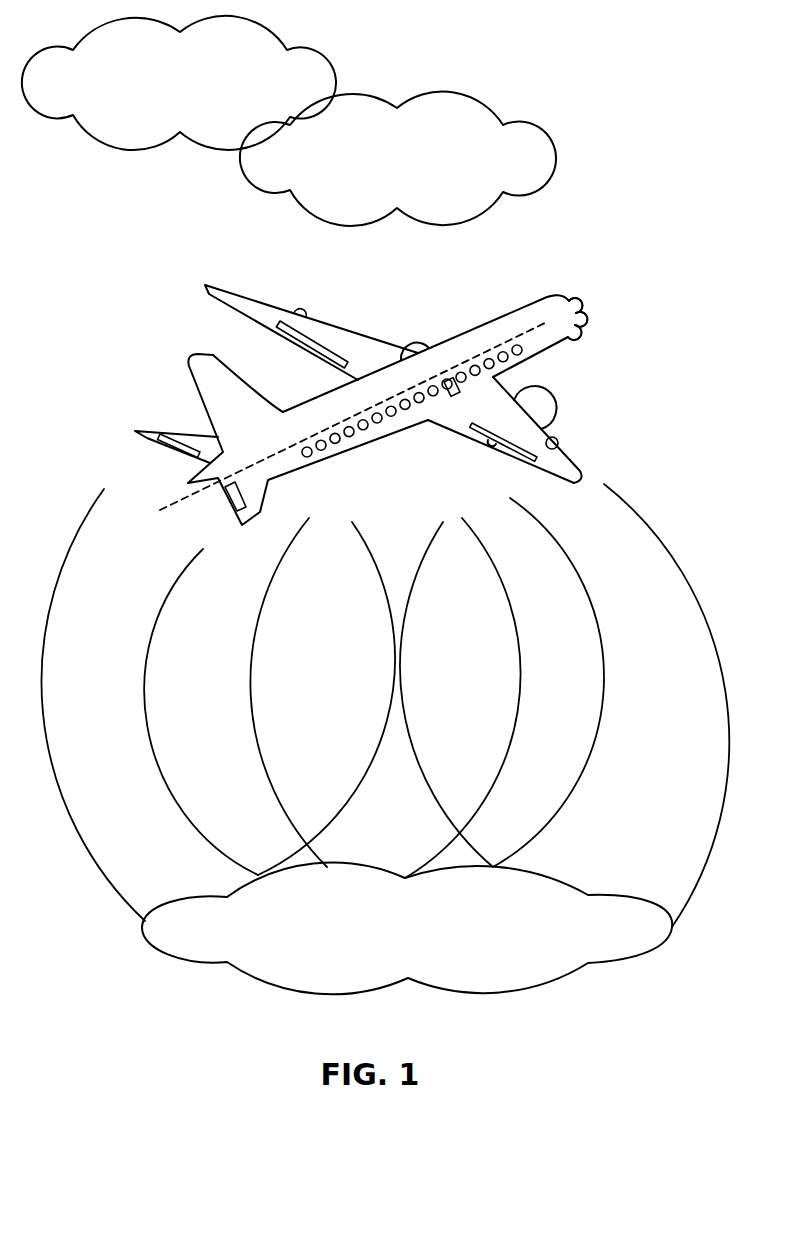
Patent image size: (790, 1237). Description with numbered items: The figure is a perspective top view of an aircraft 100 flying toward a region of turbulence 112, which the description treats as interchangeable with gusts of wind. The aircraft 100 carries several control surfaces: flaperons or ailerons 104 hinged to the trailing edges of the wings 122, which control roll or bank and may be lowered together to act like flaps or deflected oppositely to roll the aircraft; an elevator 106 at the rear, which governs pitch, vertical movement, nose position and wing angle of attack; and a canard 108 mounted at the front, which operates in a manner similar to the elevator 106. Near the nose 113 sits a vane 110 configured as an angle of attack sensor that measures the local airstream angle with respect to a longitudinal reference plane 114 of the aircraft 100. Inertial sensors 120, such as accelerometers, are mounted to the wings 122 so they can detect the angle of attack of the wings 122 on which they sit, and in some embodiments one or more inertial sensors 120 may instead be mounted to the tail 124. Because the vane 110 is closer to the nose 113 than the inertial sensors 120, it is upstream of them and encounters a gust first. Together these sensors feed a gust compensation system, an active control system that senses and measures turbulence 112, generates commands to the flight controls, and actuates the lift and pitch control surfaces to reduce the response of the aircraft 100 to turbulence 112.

The aircraft 100 is at (512, 292).
The flaperons or ailerons 104 is at (296, 349).
The elevator 106 is at (156, 443).
The canard 108 is at (593, 324).
The vane 110 is at (570, 338).
The turbulence 112 is at (384, 958).
The nose 113 is at (593, 309).
The longitudinal reference plane 114 is at (175, 500).
The inertial sensors 120 is at (300, 316).
The wings 122 is at (363, 335).
The tail 124 is at (267, 497).